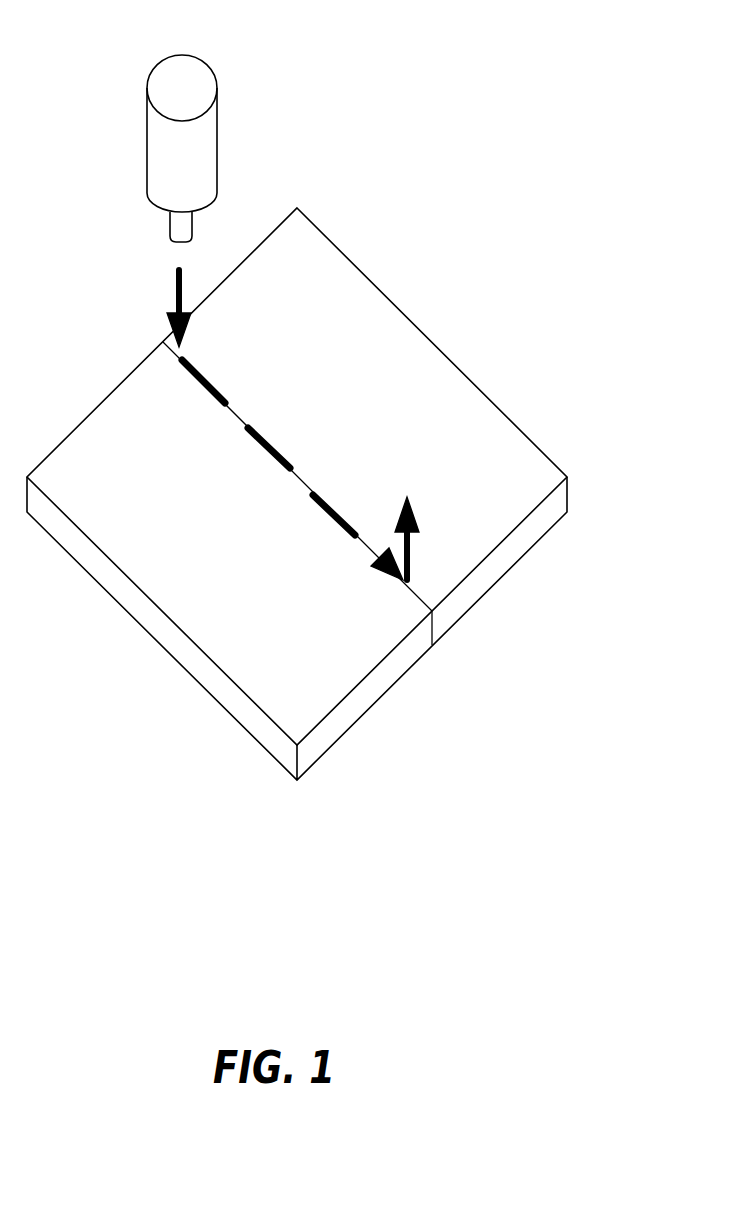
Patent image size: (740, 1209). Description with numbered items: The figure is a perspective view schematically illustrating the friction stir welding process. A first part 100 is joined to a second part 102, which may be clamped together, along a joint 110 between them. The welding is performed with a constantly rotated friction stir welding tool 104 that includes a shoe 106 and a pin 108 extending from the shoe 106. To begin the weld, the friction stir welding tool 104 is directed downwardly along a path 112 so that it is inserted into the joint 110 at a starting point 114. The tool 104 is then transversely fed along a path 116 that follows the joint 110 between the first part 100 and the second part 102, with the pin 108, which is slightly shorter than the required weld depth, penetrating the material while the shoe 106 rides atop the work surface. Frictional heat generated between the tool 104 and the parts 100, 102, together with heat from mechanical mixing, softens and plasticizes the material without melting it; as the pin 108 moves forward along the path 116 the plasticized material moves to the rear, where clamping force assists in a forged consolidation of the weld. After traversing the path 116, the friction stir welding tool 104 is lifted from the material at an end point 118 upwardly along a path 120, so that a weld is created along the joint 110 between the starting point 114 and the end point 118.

The first part 100 is at (415, 323).
The second part 102 is at (165, 628).
The friction stir welding tool 104 is at (199, 125).
The shoe 106 is at (183, 147).
The pin 108 is at (168, 232).
The joint 110 is at (433, 630).
The path 112 is at (173, 283).
The starting point 114 is at (178, 362).
The path 116 is at (330, 520).
The end point 118 is at (403, 585).
The path 120 is at (411, 538).